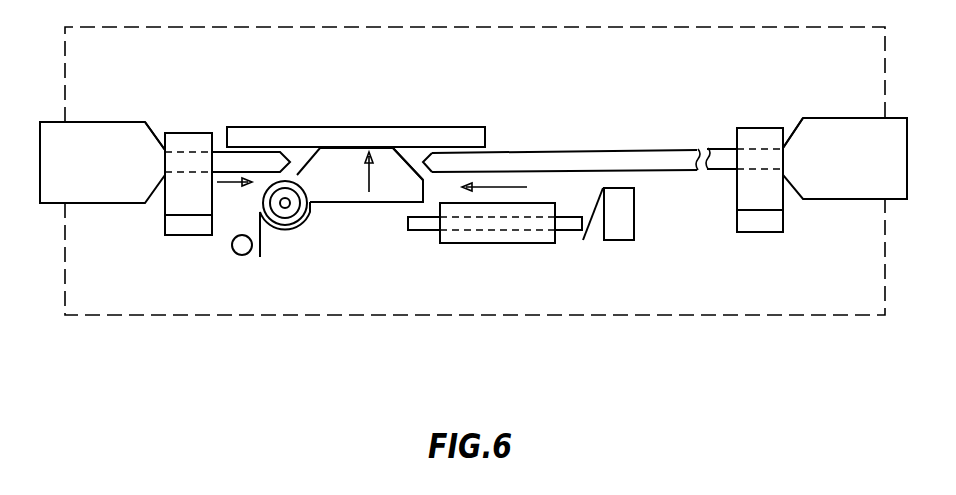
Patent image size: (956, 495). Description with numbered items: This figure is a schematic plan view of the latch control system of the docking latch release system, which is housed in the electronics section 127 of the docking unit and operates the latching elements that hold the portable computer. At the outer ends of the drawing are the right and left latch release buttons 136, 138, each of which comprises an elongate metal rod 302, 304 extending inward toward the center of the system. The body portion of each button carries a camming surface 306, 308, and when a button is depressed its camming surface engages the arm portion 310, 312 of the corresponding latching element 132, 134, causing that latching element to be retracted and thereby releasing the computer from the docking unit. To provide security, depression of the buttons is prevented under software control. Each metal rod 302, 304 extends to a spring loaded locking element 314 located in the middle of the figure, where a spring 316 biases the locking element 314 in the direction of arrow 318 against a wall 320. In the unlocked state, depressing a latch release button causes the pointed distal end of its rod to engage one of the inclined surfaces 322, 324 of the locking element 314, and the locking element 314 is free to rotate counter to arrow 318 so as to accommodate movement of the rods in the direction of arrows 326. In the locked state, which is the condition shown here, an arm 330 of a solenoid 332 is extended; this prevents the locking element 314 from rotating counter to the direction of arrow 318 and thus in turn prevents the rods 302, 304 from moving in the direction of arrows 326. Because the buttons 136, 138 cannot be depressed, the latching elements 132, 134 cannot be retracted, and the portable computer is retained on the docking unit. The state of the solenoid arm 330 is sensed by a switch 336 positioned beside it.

The electronics section 127 is at (487, 314).
The latching element 132 is at (753, 232).
The latching element 134 is at (164, 235).
The right latch release button 136 is at (848, 200).
The left latch release button 138 is at (79, 203).
The metal rod 302 is at (220, 150).
The metal rod 304 is at (627, 148).
The camming surface 306 is at (793, 130).
The camming surface 308 is at (152, 130).
The arm portion 310 is at (785, 200).
The arm portion 312 is at (164, 198).
The locking element 314 is at (353, 205).
The spring 316 is at (261, 237).
The arrow 318 is at (385, 165).
The wall 320 is at (355, 127).
The inclined surface 322 is at (372, 176).
The inclined surface 324 is at (302, 127).
The arrows 326 is at (230, 186).
The solenoid arm 330 is at (420, 231).
The solenoid 332 is at (507, 244).
The switch 336 is at (627, 240).